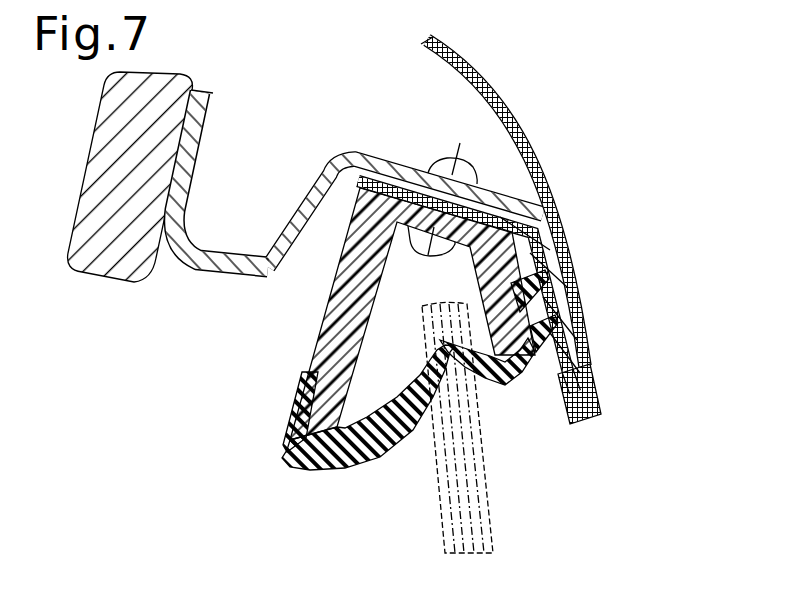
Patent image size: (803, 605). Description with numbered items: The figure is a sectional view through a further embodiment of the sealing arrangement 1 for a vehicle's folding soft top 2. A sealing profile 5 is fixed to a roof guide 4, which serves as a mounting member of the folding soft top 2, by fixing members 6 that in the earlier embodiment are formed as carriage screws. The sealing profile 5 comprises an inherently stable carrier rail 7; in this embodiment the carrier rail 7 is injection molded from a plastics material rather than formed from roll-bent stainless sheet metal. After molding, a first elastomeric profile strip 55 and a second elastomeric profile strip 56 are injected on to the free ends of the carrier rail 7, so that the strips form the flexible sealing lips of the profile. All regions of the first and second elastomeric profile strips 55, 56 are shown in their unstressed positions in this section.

The weather strip assembly 1 is at (480, 376).
The folding soft top 2 is at (496, 99).
The roof guide 4 is at (207, 124).
The sealing profile 5 is at (277, 440).
The fixing members 6 is at (430, 165).
The carrier rail 7 is at (322, 328).
The first elastomeric profile strip 55 is at (336, 474).
The second elastomeric profile strip 56 is at (531, 372).